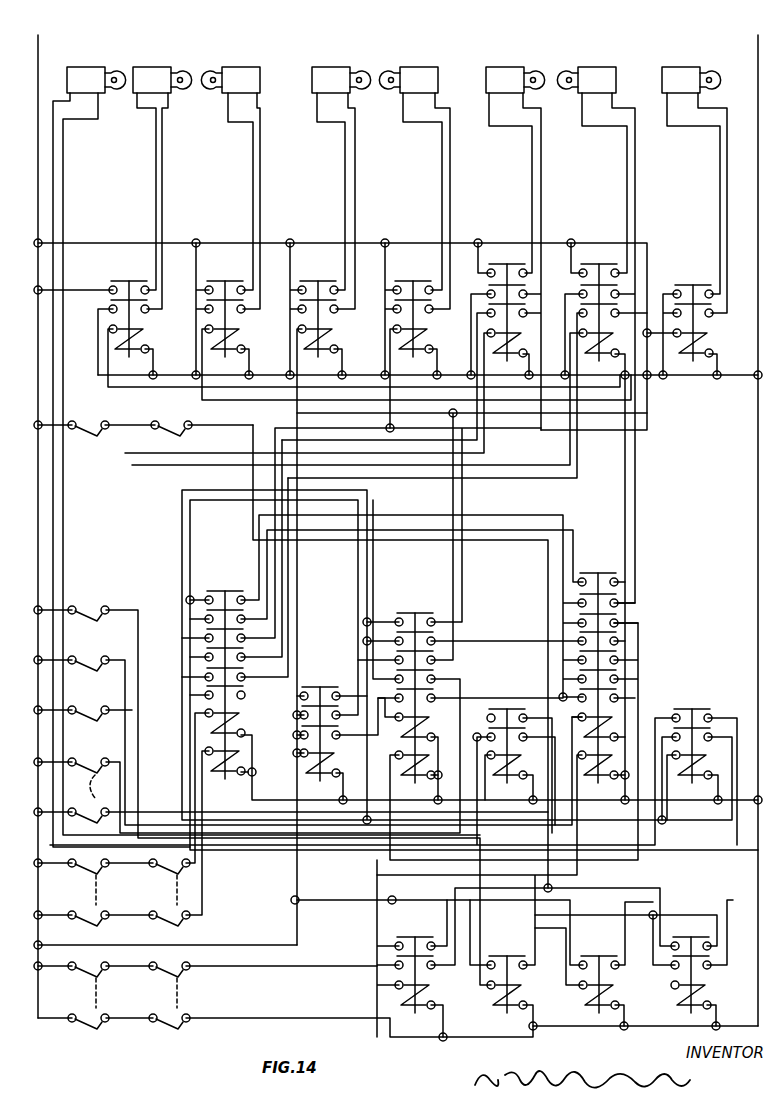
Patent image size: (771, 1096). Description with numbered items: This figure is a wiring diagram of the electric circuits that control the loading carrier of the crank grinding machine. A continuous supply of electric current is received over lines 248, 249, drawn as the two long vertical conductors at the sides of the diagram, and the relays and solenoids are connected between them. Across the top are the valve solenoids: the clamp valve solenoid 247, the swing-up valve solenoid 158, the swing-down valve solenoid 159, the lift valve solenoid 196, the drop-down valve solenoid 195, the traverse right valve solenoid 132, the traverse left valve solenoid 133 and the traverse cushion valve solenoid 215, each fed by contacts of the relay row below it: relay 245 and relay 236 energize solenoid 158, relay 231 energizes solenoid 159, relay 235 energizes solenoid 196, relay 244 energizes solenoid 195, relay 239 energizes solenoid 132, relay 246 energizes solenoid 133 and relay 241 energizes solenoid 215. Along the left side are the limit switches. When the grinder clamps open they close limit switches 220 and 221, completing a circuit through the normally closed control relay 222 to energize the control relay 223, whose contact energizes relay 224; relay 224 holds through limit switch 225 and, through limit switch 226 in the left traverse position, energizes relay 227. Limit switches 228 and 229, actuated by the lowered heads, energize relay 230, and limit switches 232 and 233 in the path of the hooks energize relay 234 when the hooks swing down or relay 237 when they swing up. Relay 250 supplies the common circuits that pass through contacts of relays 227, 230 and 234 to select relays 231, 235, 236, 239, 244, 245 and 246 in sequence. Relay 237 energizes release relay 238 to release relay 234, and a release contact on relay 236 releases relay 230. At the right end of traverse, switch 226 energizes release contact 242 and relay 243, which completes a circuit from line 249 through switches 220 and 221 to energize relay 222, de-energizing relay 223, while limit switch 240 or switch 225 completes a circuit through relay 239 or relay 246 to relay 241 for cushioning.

The clamp valve solenoid 247 is at (90, 66).
The swing-up valve solenoid 158 is at (153, 66).
The swing-down valve solenoid 159 is at (241, 66).
The valve solenoid 196 is at (331, 66).
The drop-down valve solenoid 195 is at (419, 66).
The traverse right valve solenoid 132 is at (505, 66).
The traverse left valve solenoid 133 is at (597, 66).
The traverse cushion valve solenoid 215 is at (681, 66).
The supply line 248 is at (38, 200).
The supply line 249 is at (758, 92).
The relay 245 is at (130, 290).
The relay 231 is at (236, 282).
The relay 235 is at (318, 282).
The relay 244 is at (413, 282).
The relay 239 is at (507, 266).
The relay 246 is at (600, 362).
The relay 241 is at (708, 351).
The limit switch 220 is at (88, 424).
The limit switch 221 is at (170, 424).
The limit switch 225 is at (89, 609).
The limit switch 240 is at (89, 659).
The limit switch 226 is at (293, 799).
The limit switch 228 is at (95, 892).
The limit switch 229 is at (176, 892).
The limit switch 232 is at (82, 1020).
The limit switch 233 is at (168, 1020).
The relay 230 is at (236, 730).
The relay 236 is at (224, 776).
The relay 250 is at (322, 688).
The relay 234 is at (432, 726).
The release relay 238 is at (413, 776).
The relay 237 is at (509, 710).
The relay 227 is at (614, 672).
The release contact 242 is at (600, 793).
The relay 224 is at (692, 711).
The relay 243 is at (506, 964).
The control relay 223 is at (600, 964).
The control relay 222 is at (696, 984).